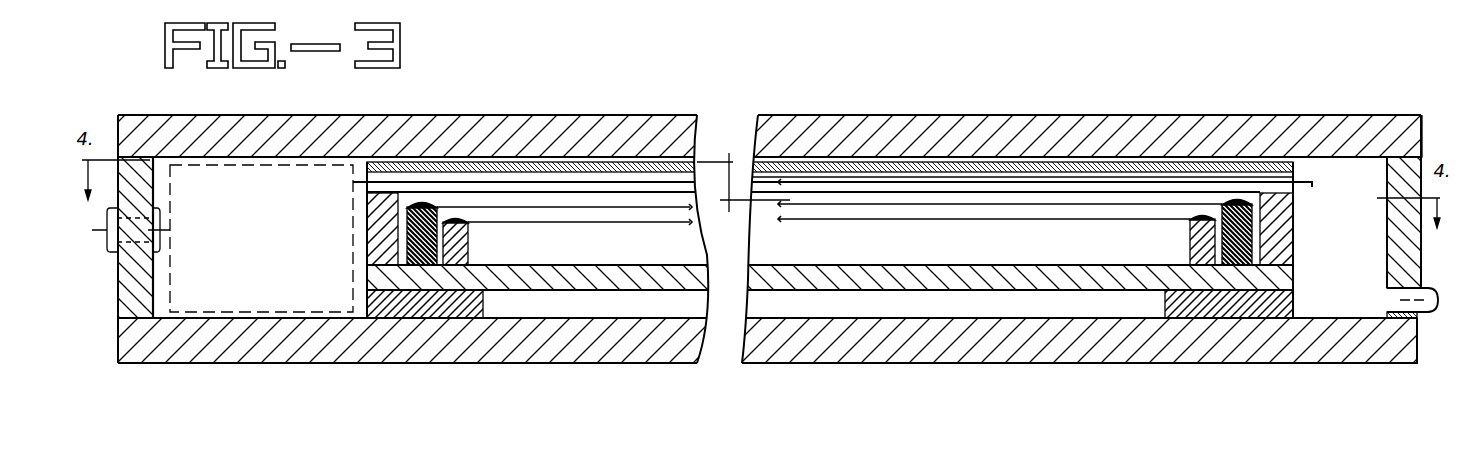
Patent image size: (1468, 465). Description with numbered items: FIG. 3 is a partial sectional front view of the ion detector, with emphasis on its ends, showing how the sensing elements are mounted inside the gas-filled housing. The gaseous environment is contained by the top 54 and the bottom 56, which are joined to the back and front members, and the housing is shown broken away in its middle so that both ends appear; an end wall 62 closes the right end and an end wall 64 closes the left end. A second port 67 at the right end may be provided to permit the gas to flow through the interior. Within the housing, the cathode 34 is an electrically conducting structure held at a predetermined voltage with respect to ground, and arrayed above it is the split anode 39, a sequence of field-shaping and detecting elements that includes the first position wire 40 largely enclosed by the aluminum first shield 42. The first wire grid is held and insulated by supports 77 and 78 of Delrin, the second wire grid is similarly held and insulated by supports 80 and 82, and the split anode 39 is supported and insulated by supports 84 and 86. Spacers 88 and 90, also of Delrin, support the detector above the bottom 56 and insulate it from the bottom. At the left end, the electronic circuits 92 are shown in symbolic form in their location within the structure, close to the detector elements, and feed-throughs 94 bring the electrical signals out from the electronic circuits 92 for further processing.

The cathode 34 is at (943, 282).
The split anode 39 is at (565, 159).
The first position wire 40 is at (863, 180).
The first shield 42 is at (808, 168).
The top 54 is at (1032, 128).
The bottom 56 is at (921, 347).
The right end wall 62 is at (1398, 162).
The left end wall 64 is at (138, 283).
The second port 67 is at (1390, 300).
The support 77 is at (472, 245).
The support 78 is at (1190, 242).
The support 80 is at (428, 245).
The support 82 is at (1245, 240).
The support 84 is at (382, 228).
The support 86 is at (1283, 212).
The spacer 88 is at (485, 305).
The spacer 90 is at (1175, 308).
The electronic circuits 92 is at (275, 303).
The feed-throughs 94 is at (163, 243).